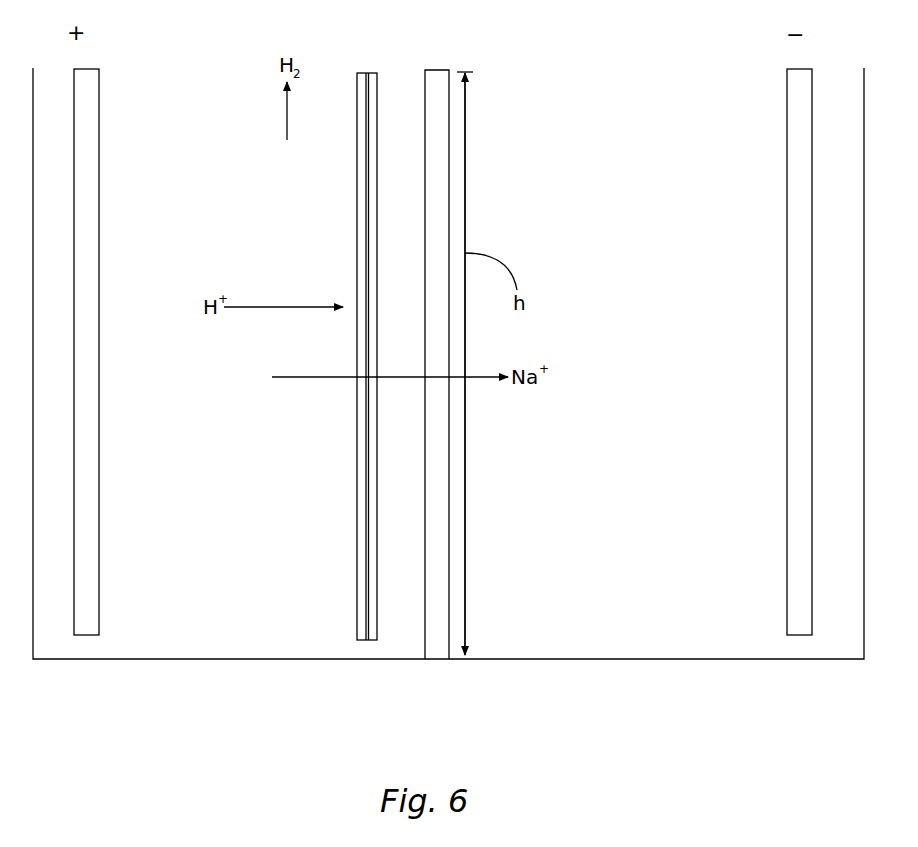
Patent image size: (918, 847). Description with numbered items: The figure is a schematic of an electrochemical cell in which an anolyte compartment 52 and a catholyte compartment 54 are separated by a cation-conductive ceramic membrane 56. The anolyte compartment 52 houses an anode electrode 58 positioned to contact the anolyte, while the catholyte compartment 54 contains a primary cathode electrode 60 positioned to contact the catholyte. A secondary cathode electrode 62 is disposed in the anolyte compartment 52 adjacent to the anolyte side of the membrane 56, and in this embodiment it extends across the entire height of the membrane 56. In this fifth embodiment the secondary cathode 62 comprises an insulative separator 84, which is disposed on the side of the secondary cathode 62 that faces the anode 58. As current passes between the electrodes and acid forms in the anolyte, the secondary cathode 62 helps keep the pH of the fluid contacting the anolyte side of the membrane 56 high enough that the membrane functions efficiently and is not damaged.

The anolyte compartment 52 is at (199, 456).
The catholyte compartment 54 is at (666, 456).
The cation-conductive ceramic membrane 56 is at (437, 70).
The anode electrode 58 is at (86, 282).
The primary cathode electrode 60 is at (800, 277).
The secondary cathode electrode 62 is at (369, 73).
The insulative separator 84 is at (357, 82).